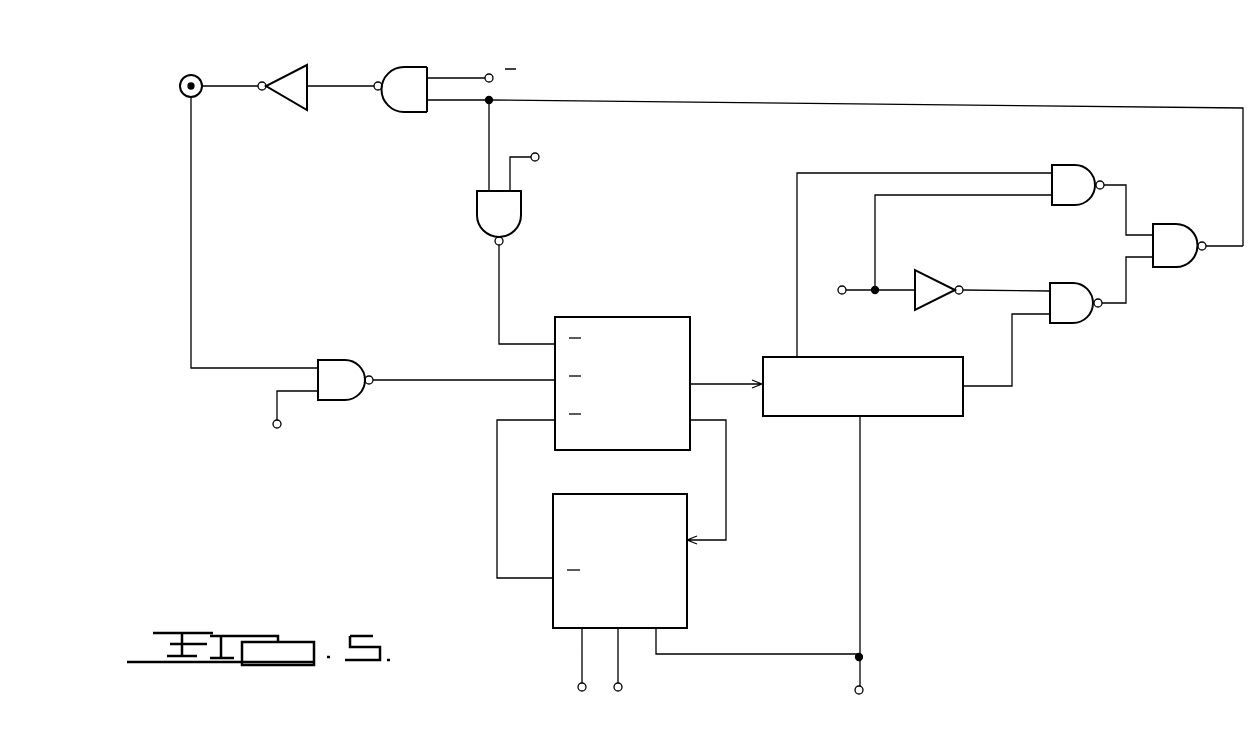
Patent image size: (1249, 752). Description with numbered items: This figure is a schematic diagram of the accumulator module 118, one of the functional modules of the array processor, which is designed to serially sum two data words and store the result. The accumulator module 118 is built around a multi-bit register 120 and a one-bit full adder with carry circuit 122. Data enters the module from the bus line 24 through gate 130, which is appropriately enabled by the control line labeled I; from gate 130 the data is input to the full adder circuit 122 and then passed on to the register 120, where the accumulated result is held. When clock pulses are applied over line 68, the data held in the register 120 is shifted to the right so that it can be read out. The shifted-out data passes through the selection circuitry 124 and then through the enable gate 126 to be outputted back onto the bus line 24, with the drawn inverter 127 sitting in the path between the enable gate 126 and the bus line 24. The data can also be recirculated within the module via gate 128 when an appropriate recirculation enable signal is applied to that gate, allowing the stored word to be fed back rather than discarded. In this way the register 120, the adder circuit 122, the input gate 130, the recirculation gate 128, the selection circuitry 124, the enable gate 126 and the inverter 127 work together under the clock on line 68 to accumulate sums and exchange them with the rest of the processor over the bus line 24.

The data line 24 is at (195, 76).
The inverter 127 is at (296, 84).
The enable gate 126 is at (418, 74).
The accumulator module 118 is at (948, 87).
The recirculation gate 128 is at (494, 212).
The input gate 130 is at (347, 370).
The 1-Bit Full Adder with carry circuit 122 is at (472, 525).
The multi-bit register 120 is at (930, 372).
The clock line 68 is at (863, 686).
The selection circuitry 124 is at (1074, 350).